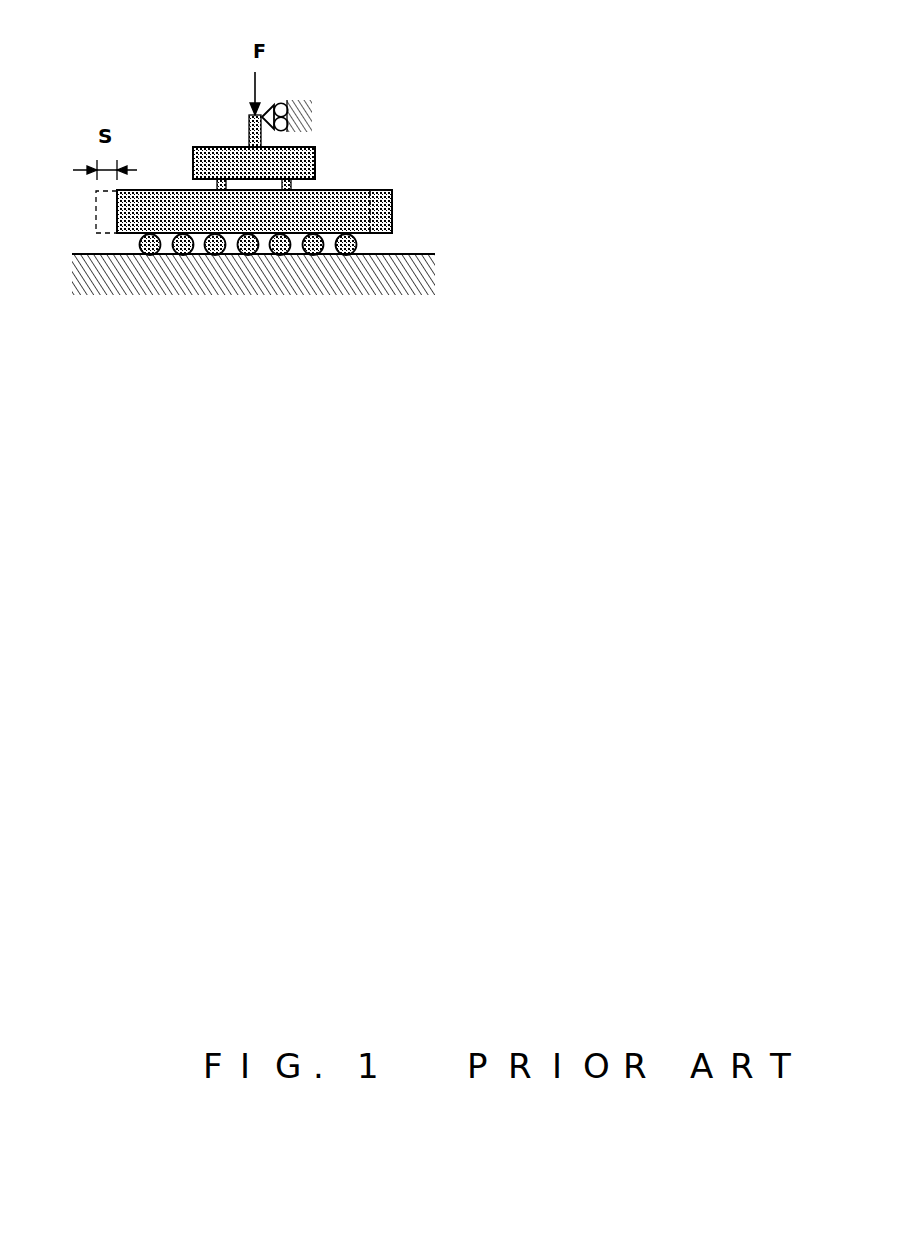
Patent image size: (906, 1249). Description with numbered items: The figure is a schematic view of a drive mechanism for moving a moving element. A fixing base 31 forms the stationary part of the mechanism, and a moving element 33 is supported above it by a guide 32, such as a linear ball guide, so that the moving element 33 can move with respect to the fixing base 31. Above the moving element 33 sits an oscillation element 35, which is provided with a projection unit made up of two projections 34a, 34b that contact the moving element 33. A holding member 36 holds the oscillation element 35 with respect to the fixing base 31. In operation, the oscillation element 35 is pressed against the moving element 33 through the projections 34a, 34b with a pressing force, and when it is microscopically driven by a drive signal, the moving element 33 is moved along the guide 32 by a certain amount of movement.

The fixing base 31 is at (433, 283).
The guide 32 is at (357, 243).
The moving element 33 is at (392, 208).
The projection unit 34a is at (297, 186).
The projection unit 34b is at (215, 187).
The oscillation element 35 is at (316, 161).
The holding member 36 is at (275, 102).